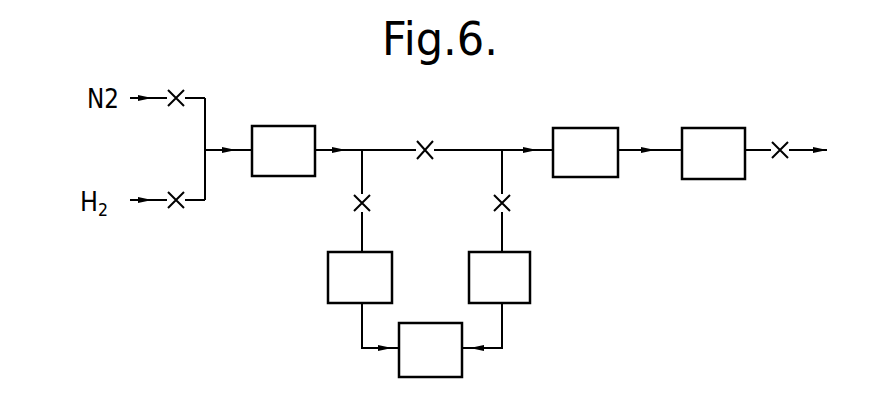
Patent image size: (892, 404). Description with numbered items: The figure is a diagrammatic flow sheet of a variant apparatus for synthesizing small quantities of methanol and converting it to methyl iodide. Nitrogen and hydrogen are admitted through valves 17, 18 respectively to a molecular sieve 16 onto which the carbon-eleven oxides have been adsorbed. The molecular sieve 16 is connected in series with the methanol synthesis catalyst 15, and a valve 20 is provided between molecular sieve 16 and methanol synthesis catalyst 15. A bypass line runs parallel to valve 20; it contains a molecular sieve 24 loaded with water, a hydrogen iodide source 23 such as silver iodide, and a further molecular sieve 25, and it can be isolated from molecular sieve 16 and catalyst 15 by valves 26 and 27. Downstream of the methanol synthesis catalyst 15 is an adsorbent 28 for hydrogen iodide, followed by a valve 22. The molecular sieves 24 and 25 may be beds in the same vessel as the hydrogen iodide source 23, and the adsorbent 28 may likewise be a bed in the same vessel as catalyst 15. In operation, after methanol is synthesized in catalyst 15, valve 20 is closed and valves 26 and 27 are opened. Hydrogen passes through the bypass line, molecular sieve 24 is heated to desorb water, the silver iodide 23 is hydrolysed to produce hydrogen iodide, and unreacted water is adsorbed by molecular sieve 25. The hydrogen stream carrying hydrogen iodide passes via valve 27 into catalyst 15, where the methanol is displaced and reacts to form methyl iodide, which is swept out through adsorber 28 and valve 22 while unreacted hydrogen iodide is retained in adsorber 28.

The methanol synthesis catalyst cartridge 15 is at (598, 162).
The molecular sieve cartridge 16 is at (296, 161).
The nitrogen supply valve 17 is at (176, 80).
The hydrogen supply valve 18 is at (175, 216).
The isolating valve 20 is at (426, 168).
The downstream valve 22 is at (784, 172).
The hydrogen iodide source 23 is at (443, 361).
The water-loaded molecular sieve 24 is at (372, 287).
The molecular sieve 25 is at (512, 287).
The first bypass valve 26 is at (345, 203).
The second bypass valve 27 is at (519, 203).
The hydrogen iodide adsorbent 28 is at (726, 162).